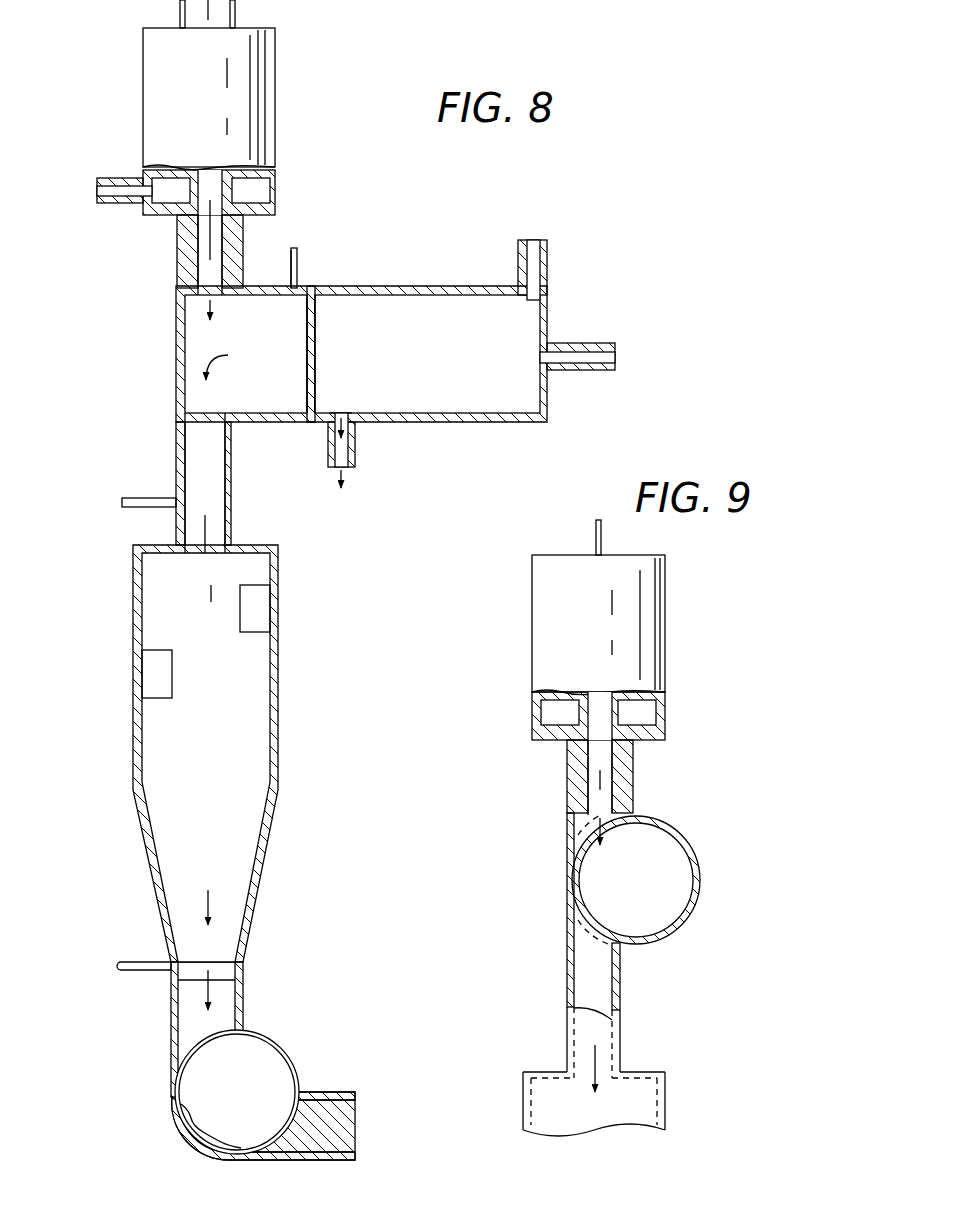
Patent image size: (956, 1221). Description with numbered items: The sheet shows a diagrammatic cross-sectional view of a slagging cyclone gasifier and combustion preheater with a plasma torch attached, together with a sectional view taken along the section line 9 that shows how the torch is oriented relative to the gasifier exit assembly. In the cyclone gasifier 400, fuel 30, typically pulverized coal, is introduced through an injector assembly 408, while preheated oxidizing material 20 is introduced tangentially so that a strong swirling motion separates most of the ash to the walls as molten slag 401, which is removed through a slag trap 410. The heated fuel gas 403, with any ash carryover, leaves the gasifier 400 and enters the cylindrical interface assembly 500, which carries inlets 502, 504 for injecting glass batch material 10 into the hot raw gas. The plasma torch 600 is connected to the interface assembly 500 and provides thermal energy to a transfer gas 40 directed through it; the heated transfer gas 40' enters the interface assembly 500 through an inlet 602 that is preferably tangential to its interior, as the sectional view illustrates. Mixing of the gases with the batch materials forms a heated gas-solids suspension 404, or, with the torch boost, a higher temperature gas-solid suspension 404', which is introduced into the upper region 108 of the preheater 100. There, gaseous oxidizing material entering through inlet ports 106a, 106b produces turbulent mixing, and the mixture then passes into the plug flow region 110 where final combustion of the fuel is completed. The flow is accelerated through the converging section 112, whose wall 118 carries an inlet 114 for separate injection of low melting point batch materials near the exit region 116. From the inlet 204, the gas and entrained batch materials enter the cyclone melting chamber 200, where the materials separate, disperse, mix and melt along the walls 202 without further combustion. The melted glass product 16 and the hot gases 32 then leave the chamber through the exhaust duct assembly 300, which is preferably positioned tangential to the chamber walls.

In FIG. 8, the plasma torch 600 is at (278, 103).
In FIG. 9, the plasma torch 600 is at (670, 666).
In FIG. 8, the inlet 602 is at (175, 262).
In FIG. 9, the inlet 602 is at (633, 798).
In FIG. 8, the transfer gas 40 is at (87, 191).
In FIG. 8, the heated transfer gas 40' is at (225, 340).
In FIG. 9, the heated transfer gas 40' is at (617, 847).
In FIG. 8, the glass batch material 10 is at (294, 248).
In FIG. 8, the inlet 502 is at (298, 280).
In FIG. 8, the interface assembly 500 is at (175, 346).
In FIG. 9, the interface assembly 500 is at (702, 896).
In FIG. 8, the cyclone gasifier 400 is at (415, 286).
In FIG. 8, the heated fuel gas 403 is at (285, 353).
In FIG. 8, the molten slag 401 is at (342, 429).
In FIG. 8, the slag trap 410 is at (360, 448).
In FIG. 8, the oxidizing material 20 is at (536, 240).
In FIG. 8, the injector assembly 408 is at (591, 343).
In FIG. 8, the fuel 30 is at (625, 356).
In FIG. 8, the inlet 504 is at (151, 498).
In FIG. 8, the gas-solids suspension 404 is at (219, 503).
In FIG. 8, the section line 9 is at (220, 602).
In FIG. 8, the inlet port 106a is at (157, 673).
In FIG. 8, the inlet port 106b is at (260, 624).
In FIG. 8, the upper region 108 is at (238, 694).
In FIG. 8, the plug flow region 110 is at (232, 758).
In FIG. 8, the converging section 112 is at (228, 868).
In FIG. 8, the wall 118 is at (150, 872).
In FIG. 8, the inlet 114 is at (133, 958).
In FIG. 8, the exit region 116 is at (215, 951).
In FIG. 8, the inlet 204 is at (246, 1022).
In FIG. 8, the cyclone melting chamber 200 is at (290, 1064).
In FIG. 8, the walls 202 is at (276, 1056).
In FIG. 8, the melted glass product 16 is at (206, 1136).
In FIG. 8, the hot gases 32 is at (362, 1115).
In FIG. 8, the exhaust duct assembly 300 is at (315, 1162).
In FIG. 9, the gas-solid suspension 404' is at (599, 971).
In FIG. 9, the preheater 100 is at (668, 1110).